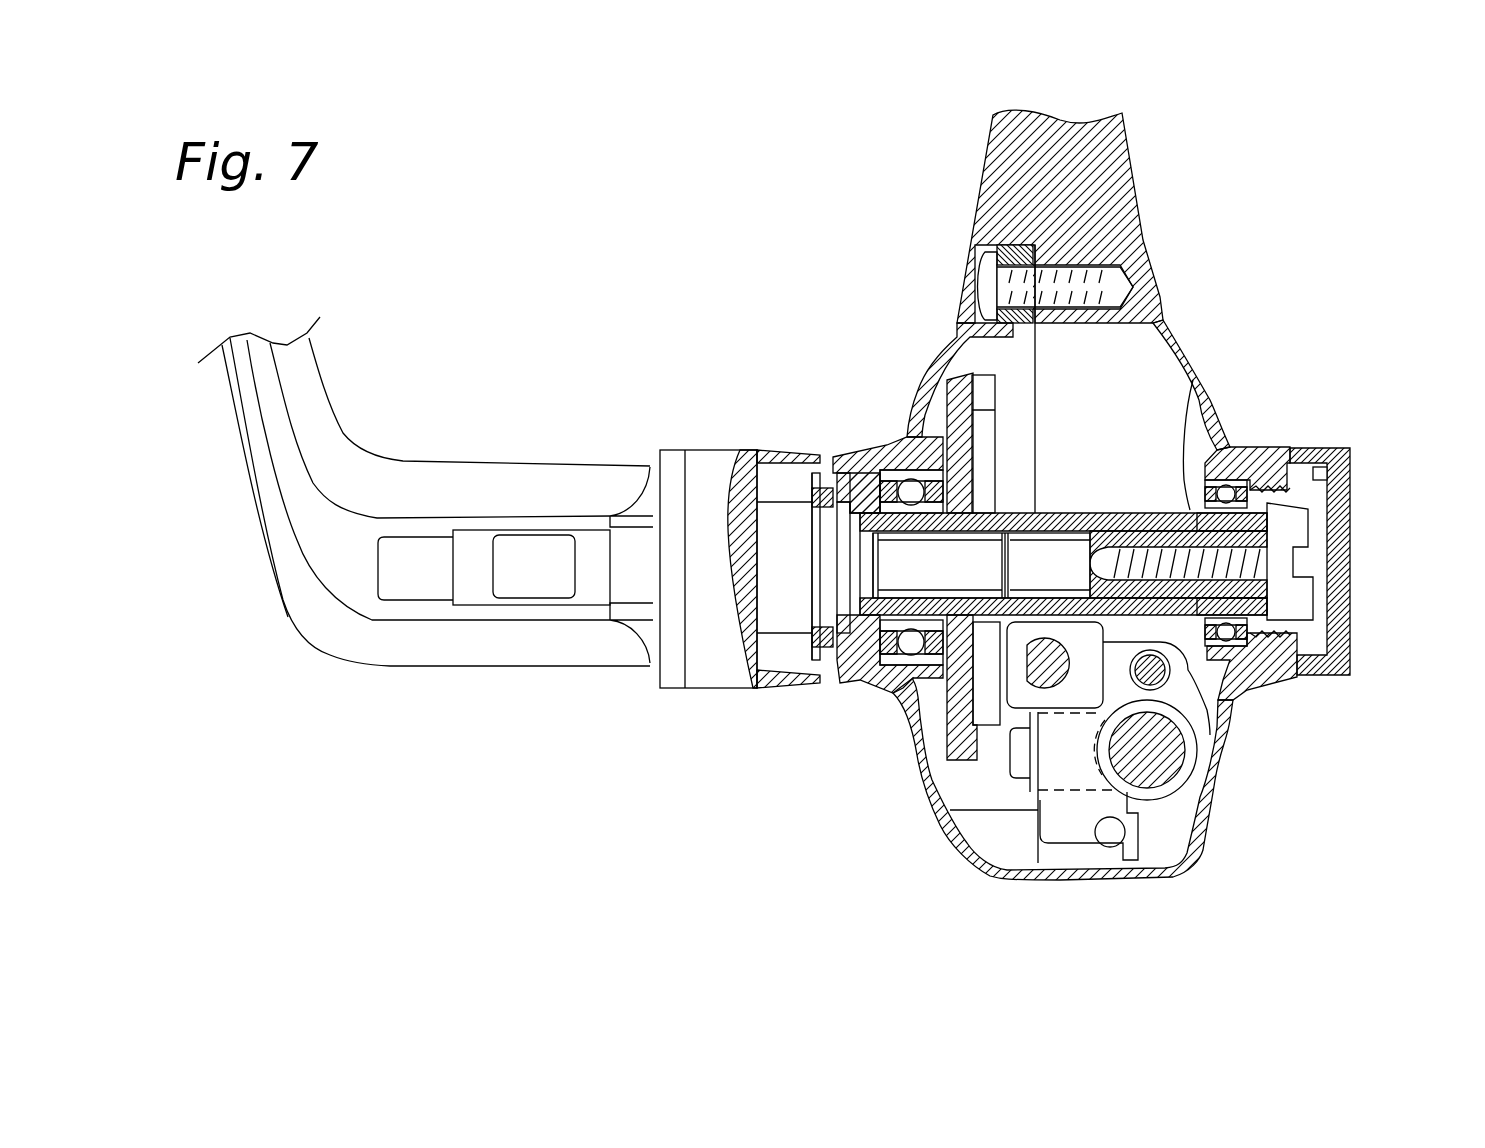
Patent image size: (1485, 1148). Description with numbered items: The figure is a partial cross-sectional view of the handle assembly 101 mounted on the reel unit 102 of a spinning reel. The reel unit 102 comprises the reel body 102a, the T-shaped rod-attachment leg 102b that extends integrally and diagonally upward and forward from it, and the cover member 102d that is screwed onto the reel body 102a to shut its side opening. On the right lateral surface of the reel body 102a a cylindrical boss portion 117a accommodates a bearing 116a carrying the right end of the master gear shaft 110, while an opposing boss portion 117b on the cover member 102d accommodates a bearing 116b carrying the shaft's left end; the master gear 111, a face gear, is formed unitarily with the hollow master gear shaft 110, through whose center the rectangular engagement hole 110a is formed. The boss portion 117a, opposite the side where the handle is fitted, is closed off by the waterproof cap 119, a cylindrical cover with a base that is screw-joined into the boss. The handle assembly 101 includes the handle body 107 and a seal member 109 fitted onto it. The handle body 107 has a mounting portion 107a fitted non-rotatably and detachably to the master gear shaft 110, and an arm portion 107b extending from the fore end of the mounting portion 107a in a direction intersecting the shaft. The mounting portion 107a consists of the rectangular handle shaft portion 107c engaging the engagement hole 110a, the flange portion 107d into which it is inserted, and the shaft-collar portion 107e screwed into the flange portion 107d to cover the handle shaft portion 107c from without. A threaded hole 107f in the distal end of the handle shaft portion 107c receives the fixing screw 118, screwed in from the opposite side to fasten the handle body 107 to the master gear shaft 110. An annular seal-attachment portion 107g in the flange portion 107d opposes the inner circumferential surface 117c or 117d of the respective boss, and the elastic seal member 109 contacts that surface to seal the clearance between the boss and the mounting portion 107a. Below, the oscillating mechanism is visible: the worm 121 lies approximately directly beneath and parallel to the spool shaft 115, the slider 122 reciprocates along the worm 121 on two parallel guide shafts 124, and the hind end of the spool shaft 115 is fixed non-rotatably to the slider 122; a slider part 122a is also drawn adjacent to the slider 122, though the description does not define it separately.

The handle assembly 101 is at (483, 427).
The reel unit 102 is at (1190, 323).
The reel body 102a is at (1147, 257).
The rod-attachment leg 102b is at (1120, 133).
The cover member 102d is at (940, 343).
The handle body 107 is at (607, 683).
The mounting portion 107a is at (903, 573).
The arm portion 107b is at (370, 467).
The handle shaft portion 107c is at (925, 670).
The flange portion 107d is at (768, 580).
The shaft-collar portion 107e is at (707, 618).
The threaded hole 107f is at (1210, 445).
The seal-attachment portion 107g is at (818, 583).
The seal member 109 is at (800, 480).
The master gear shaft 110 is at (1060, 515).
The engagement hole 110a is at (967, 543).
The master gear 111 is at (1000, 390).
The spool shaft 115 is at (1070, 818).
The bearing 116a is at (1243, 478).
The bearing 116b is at (887, 470).
The boss portion 117a is at (1310, 445).
The boss portion 117b is at (850, 480).
The inner circumferential surface 117c is at (1335, 458).
The inner circumferential surface 117d is at (820, 478).
The fixing screw 118 is at (1300, 531).
The waterproof cap 119 is at (1350, 485).
The worm 121 is at (1170, 752).
The slider 122 is at (1035, 822).
The piston 122a is at (1113, 835).
The guide shafts 124 is at (1165, 672).